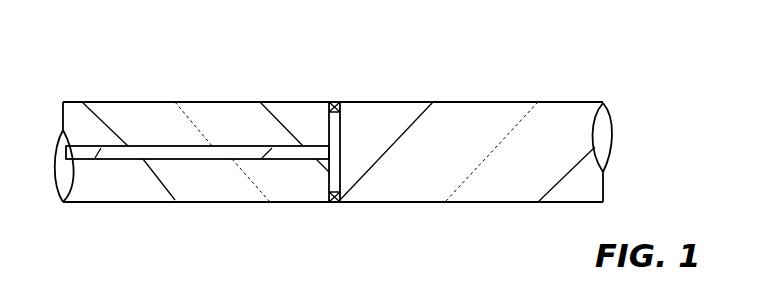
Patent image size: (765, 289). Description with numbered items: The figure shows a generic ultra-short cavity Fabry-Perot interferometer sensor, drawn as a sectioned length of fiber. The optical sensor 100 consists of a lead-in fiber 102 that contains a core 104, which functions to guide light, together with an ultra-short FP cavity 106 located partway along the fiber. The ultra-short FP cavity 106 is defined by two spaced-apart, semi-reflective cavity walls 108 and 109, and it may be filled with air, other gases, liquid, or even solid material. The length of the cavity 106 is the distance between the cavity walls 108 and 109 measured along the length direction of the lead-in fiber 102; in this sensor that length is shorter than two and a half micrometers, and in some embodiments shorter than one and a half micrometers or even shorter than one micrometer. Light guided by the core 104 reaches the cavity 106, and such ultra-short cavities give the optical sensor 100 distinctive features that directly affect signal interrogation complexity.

The optical sensor 100 is at (199, 82).
The lead-in fiber 102 is at (174, 197).
The core 104 is at (200, 157).
The ultra-short FP cavity 106 is at (337, 140).
The semi-reflective cavity wall 108 is at (341, 171).
The semi-reflective cavity wall 109 is at (329, 173).